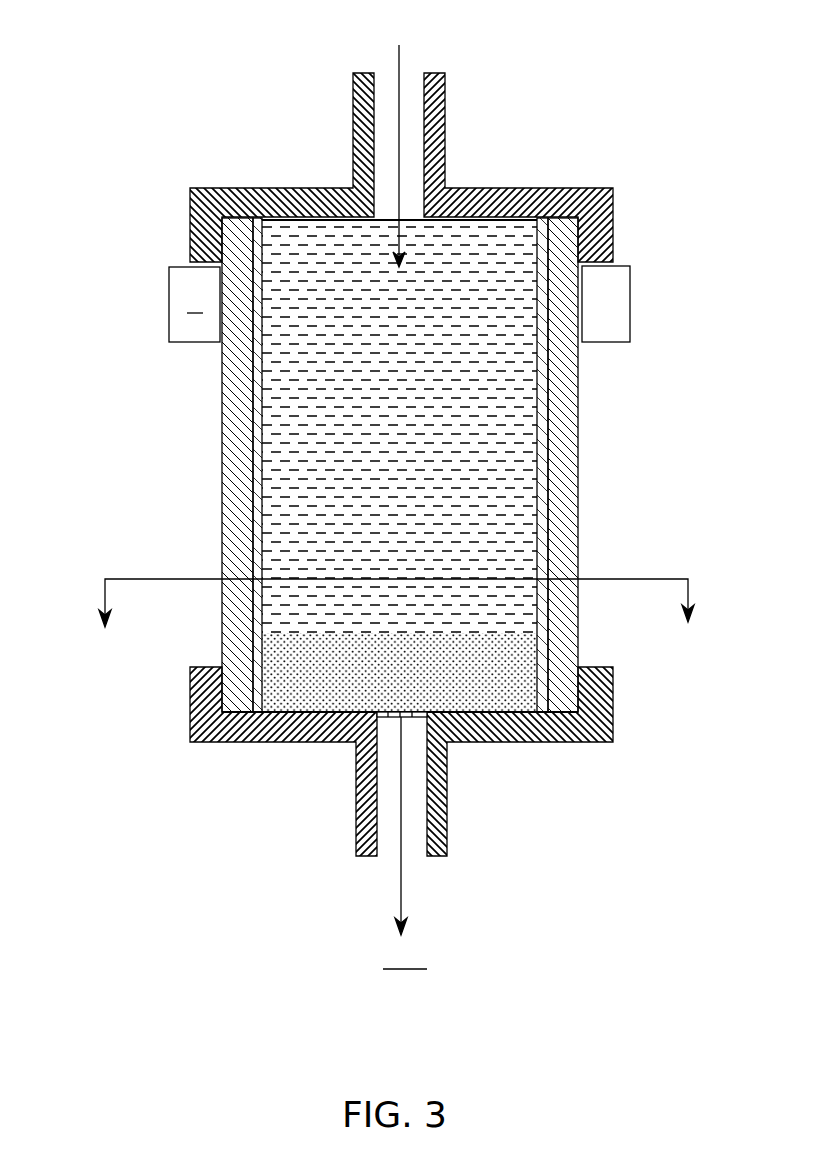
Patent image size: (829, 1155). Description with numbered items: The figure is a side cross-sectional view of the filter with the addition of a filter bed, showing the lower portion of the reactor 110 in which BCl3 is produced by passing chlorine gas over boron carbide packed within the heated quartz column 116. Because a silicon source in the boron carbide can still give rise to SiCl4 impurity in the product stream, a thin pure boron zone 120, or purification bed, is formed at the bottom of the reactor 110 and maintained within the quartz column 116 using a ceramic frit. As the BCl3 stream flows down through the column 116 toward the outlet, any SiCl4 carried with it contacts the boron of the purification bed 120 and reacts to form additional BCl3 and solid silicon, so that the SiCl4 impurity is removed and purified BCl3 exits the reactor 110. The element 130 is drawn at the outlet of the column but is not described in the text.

The reactor 110 is at (580, 145).
The quartz column 116 is at (218, 460).
The thin pure boron zone 120 is at (325, 633).
The outlet filter grate 130 is at (387, 717).